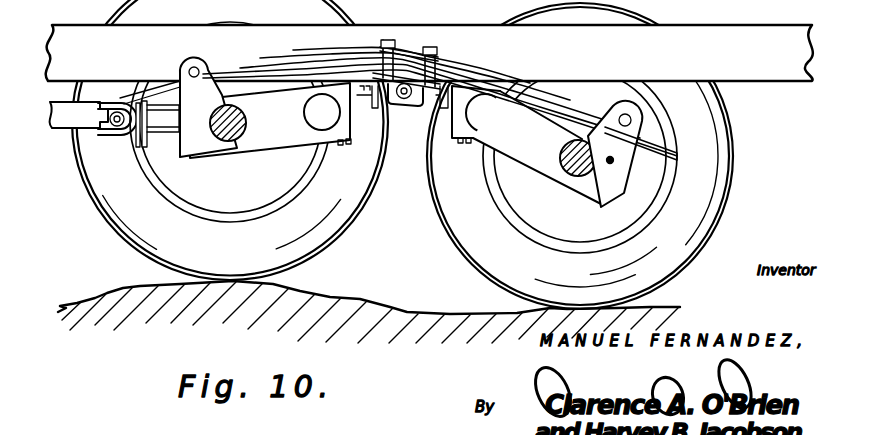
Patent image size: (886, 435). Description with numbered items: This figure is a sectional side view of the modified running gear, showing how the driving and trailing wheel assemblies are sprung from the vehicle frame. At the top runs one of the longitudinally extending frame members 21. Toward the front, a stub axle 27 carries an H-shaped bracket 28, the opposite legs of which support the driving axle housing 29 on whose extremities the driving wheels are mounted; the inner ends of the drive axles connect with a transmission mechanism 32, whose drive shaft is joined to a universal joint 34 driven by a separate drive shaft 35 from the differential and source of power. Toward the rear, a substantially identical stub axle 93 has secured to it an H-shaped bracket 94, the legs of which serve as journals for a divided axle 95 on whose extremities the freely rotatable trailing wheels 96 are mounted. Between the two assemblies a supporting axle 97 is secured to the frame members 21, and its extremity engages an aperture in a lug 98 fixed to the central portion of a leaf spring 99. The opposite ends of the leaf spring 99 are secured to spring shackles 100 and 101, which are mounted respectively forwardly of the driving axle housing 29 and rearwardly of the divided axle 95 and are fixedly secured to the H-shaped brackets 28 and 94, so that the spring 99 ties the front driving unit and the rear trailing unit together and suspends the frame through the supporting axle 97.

The longitudinally extending frame members 21 is at (766, 4).
The stub axle 27 is at (323, 122).
The H-shaped bracket 28 is at (282, 120).
The driving axle housing 29 is at (232, 142).
The transmission mechanism 32 is at (162, 136).
The universal joint 34 is at (118, 134).
The drive shaft 35 is at (62, 124).
The stub axle 93 is at (484, 122).
The H-shaped bracket 94 is at (526, 152).
The divided axle 95 is at (571, 180).
The trailing wheel 96 is at (336, 221).
The supporting axle 97 is at (399, 100).
The lug 98 is at (411, 102).
The leaf spring 99 is at (436, 66).
The spring shackle 100 is at (206, 68).
The spring shackle 101 is at (650, 143).